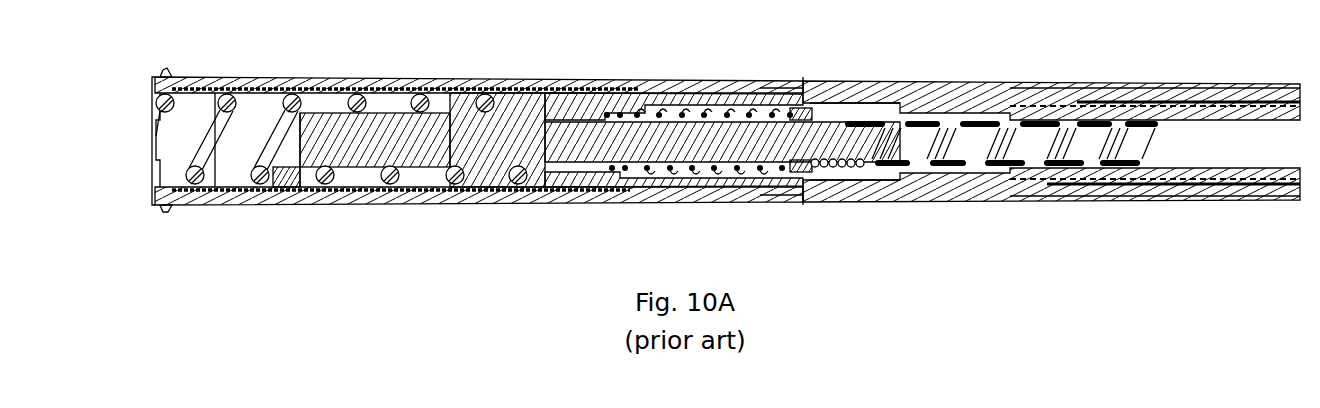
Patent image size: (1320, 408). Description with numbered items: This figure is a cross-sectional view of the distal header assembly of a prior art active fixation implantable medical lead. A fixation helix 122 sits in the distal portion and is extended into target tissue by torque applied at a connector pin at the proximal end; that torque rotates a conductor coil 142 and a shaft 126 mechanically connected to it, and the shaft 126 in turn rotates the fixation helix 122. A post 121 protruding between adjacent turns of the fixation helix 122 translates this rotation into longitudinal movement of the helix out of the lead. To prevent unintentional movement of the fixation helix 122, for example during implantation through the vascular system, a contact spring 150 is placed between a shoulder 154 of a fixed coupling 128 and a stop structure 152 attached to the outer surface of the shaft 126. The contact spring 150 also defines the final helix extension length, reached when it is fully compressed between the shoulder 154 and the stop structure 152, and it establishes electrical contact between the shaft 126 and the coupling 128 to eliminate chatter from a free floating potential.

The post 121 is at (288, 182).
The fixation helix 122 is at (228, 96).
The shaft 126 is at (556, 149).
The coupling 128 is at (636, 185).
The conductor coil 142 is at (1160, 128).
The contact spring 150 is at (709, 109).
The stop structure 152 is at (792, 166).
The shoulder 154 is at (601, 108).